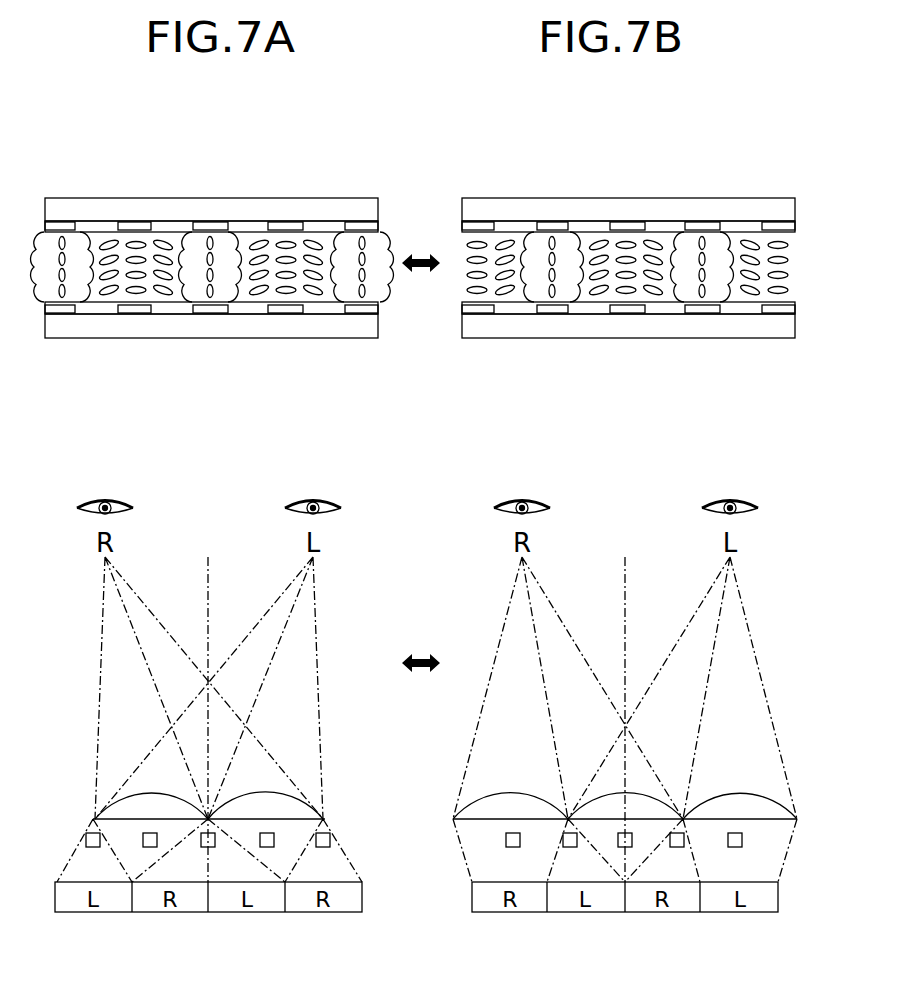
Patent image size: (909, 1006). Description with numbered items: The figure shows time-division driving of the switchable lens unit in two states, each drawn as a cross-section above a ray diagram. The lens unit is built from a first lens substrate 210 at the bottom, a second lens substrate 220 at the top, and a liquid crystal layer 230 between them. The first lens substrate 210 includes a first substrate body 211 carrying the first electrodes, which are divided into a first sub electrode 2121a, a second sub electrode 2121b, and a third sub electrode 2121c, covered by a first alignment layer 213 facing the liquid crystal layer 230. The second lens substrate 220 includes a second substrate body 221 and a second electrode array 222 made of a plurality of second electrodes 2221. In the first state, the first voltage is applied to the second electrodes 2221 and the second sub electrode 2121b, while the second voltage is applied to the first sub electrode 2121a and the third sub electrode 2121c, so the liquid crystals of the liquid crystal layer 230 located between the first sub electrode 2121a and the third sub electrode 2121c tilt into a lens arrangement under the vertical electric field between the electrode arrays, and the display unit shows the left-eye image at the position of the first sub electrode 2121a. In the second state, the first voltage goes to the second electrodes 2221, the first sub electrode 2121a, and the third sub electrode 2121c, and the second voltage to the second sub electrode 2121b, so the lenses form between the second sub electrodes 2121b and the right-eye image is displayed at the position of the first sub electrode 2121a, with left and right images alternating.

In FIG. 7A, the first lens substrate 210 is at (222, 630).
In FIG. 7B, the first lens substrate 210 is at (608, 625).
In FIG. 7A, the first substrate body 211 is at (378, 325).
In FIG. 7B, the first substrate body 211 is at (462, 328).
In FIG. 7A, the first alignment layer 213 is at (345, 299).
In FIG. 7B, the first alignment layer 213 is at (510, 307).
In FIG. 7A, the first sub electrode 2121a is at (60, 314).
In FIG. 7B, the first sub electrode 2121a is at (478, 314).
In FIG. 7A, the second sub electrode 2121b is at (135, 314).
In FIG. 7B, the second sub electrode 2121b is at (552, 314).
In FIG. 7A, the third sub electrode 2121c is at (210, 314).
In FIG. 7B, the third sub electrode 2121c is at (627, 314).
In FIG. 7A, the second lens substrate 220 is at (206, 187).
In FIG. 7B, the second lens substrate 220 is at (623, 187).
In FIG. 7A, the second substrate body 221 is at (143, 210).
In FIG. 7B, the second substrate body 221 is at (560, 210).
In FIG. 7A, the second electrode array 222 is at (207, 214).
In FIG. 7B, the second electrode array 222 is at (622, 214).
In FIG. 7A, the second electrode 2221 is at (58, 224).
In FIG. 7B, the second electrode 2221 is at (478, 224).
In FIG. 7A, the liquid crystal layer 230 is at (423, 225).
In FIG. 7B, the liquid crystal layer 230 is at (677, 240).